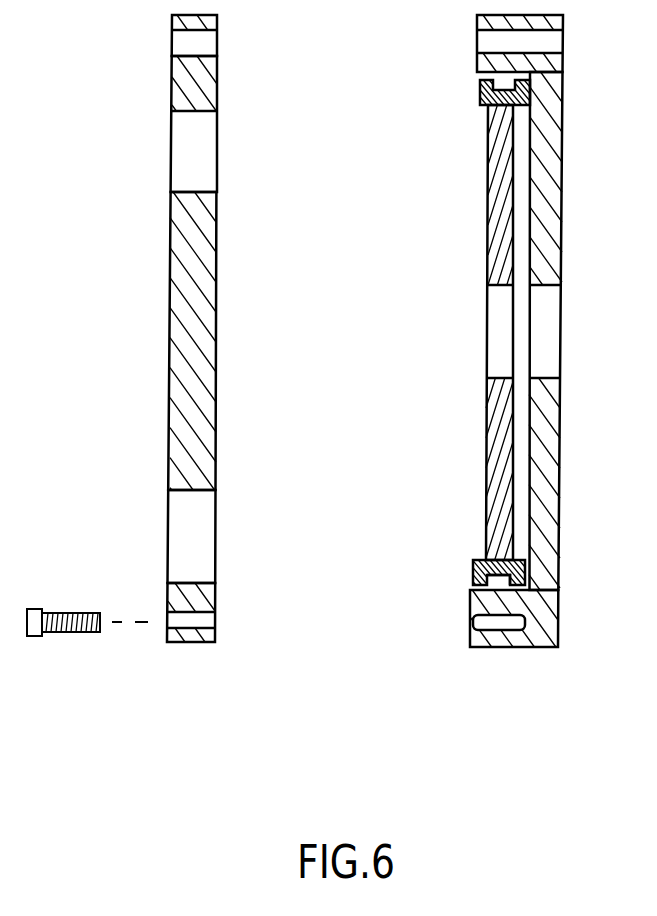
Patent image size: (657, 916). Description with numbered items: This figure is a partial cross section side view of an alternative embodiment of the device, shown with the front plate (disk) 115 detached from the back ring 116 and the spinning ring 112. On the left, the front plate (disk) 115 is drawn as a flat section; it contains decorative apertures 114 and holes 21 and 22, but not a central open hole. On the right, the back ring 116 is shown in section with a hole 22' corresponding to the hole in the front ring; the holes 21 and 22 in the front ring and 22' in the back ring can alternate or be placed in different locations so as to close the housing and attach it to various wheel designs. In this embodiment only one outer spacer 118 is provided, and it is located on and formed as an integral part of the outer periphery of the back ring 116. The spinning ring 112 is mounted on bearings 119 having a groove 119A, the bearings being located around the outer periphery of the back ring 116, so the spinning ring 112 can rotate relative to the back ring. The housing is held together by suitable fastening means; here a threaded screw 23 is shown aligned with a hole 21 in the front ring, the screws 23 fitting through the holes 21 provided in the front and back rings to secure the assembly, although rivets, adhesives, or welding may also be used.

The hole 22 is at (175, 35).
The hole 22' is at (549, 43).
The decorative aperture 114 is at (178, 147).
The front plate (disk) 115 is at (170, 408).
The hole 21 is at (170, 618).
The threaded screw 23 is at (75, 612).
The back ring 116 is at (560, 450).
The spinning ring 112 is at (486, 470).
The bearing 119 is at (526, 572).
The groove 119A is at (490, 559).
The outer spacer 118 is at (490, 647).